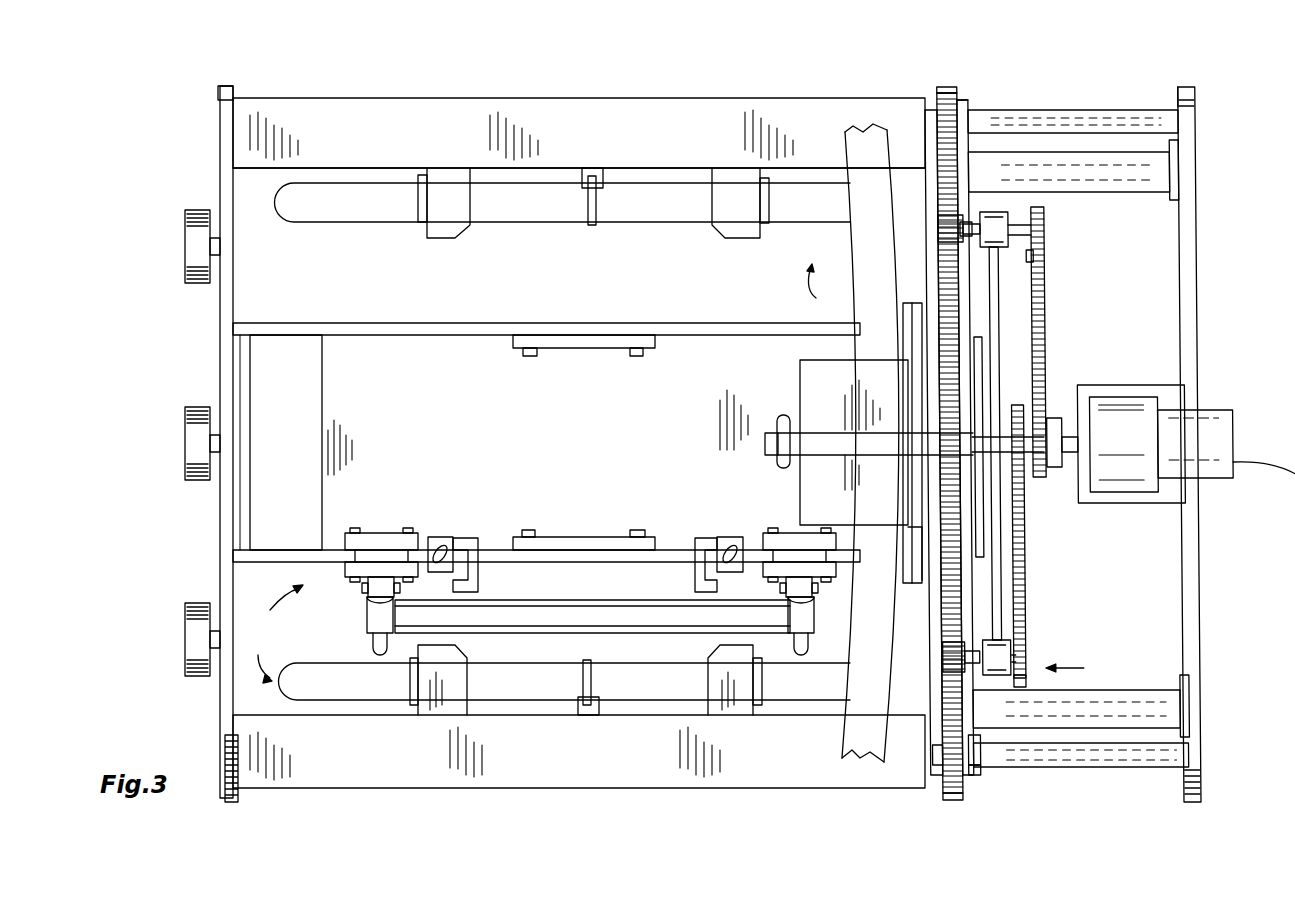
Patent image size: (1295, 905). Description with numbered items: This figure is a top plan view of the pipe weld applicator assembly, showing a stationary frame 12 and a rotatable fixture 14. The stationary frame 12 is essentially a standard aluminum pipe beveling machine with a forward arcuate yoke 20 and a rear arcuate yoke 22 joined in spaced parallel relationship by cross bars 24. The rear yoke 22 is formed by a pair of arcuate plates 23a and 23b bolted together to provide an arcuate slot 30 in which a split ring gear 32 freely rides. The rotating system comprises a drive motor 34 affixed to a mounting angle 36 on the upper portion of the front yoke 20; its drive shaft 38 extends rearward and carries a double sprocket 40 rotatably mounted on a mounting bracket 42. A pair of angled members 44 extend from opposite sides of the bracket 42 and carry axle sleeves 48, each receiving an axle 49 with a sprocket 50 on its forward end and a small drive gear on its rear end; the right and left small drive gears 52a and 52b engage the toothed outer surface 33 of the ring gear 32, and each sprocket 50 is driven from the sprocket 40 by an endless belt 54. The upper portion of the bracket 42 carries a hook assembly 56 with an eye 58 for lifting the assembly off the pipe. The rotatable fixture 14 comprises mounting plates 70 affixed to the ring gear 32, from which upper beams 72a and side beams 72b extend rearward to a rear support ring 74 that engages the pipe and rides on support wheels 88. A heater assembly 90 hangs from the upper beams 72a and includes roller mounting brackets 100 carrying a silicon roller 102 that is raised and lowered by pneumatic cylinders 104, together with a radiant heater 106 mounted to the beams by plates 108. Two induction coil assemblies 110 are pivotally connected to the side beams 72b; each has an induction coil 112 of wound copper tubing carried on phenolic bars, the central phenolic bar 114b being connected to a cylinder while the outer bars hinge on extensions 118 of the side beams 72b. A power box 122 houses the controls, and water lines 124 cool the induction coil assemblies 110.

The stationary frame 12 is at (1103, 78).
The rotatable fixture 14 is at (355, 72).
The forward arcuate yoke 20 is at (1194, 100).
The rear arcuate yoke 22 is at (927, 113).
The arcuate plate 23a is at (972, 745).
The arcuate plate 23b is at (933, 755).
The cross bars 24 is at (1070, 112).
The arcuate slot 30 is at (962, 100).
The split ring gear 32 is at (944, 87).
The toothed outer surface 33 is at (936, 88).
The drive motor 34 is at (1222, 433).
The mounting angle 36 is at (1180, 497).
The drive shaft 38 is at (1068, 445).
The double sprocket 40 is at (1050, 423).
The mounting bracket 42 is at (978, 365).
The angled members 44 is at (1040, 308).
The axle sleeves 48 is at (1005, 215).
The axle 49 is at (958, 218).
The sprocket 50 is at (1084, 673).
The right small drive gear 52a is at (938, 224).
The left small drive gear 52b is at (955, 644).
The endless belt 54 is at (1025, 238).
The hook assembly 56 is at (885, 455).
The eye 58 is at (776, 418).
The mounting plates 70 is at (919, 303).
The upper beams 72a is at (279, 332).
The side beams 72b is at (260, 107).
The rear support ring 74 is at (220, 342).
The support wheels 88 is at (187, 242).
The heater assembly 90 is at (275, 608).
The roller mounting brackets 100 is at (353, 576).
The silicon roller 102 is at (580, 602).
The pneumatic cylinders 104 is at (370, 620).
The radiant heater 106 is at (328, 464).
The plates 108 is at (581, 328).
The induction coil assemblies 110 is at (544, 473).
The induction coil 112 is at (322, 187).
The central phenolic bar 114b is at (590, 202).
The extensions 118 is at (432, 190).
The power box 122 is at (795, 478).
The water lines 124 is at (864, 154).